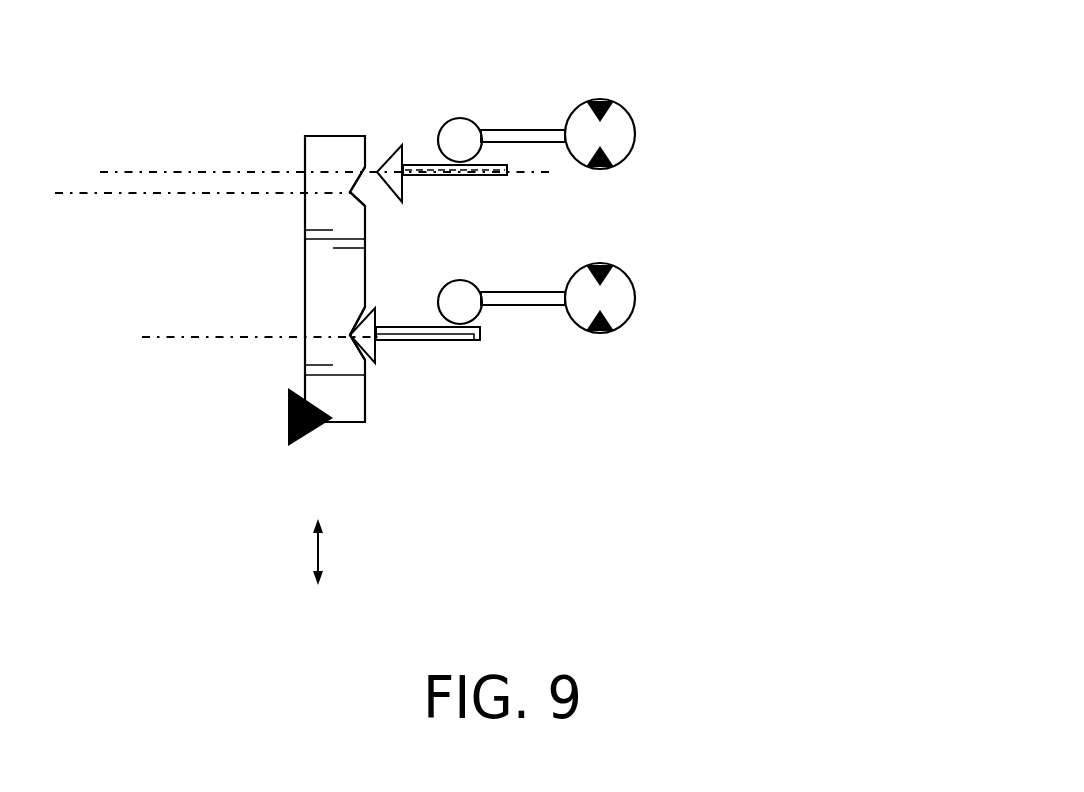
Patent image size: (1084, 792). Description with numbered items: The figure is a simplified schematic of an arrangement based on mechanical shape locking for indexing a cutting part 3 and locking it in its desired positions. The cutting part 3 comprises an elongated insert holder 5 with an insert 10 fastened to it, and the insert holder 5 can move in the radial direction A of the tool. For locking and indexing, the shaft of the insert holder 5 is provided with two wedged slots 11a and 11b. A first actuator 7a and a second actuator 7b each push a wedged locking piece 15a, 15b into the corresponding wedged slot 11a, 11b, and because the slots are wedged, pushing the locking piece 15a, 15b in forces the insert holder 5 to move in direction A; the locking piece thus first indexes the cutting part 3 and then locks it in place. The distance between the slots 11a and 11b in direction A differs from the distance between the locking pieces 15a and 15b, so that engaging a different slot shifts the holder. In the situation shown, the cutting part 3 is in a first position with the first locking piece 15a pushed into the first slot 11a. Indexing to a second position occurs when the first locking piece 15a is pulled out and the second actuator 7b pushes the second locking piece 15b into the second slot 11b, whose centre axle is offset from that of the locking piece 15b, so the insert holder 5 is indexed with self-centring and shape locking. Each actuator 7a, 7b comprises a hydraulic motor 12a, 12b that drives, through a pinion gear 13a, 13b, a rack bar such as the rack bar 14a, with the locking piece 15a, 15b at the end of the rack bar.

The cutting part 3 is at (160, 378).
The insert holder 5 is at (357, 400).
The first actuator 7a is at (824, 352).
The second actuator 7b is at (822, 129).
The insert 10 is at (288, 421).
The first slot 11a is at (350, 335).
The second slot 11b is at (350, 191).
The hydraulic motor 12a is at (617, 290).
The hydraulic motor 12b is at (613, 143).
The pinion gear 13a is at (462, 295).
The pinion gear 13b is at (457, 140).
The rack bar 14a is at (476, 342).
The first locking piece 15a is at (375, 357).
The second locking piece 15b is at (383, 165).